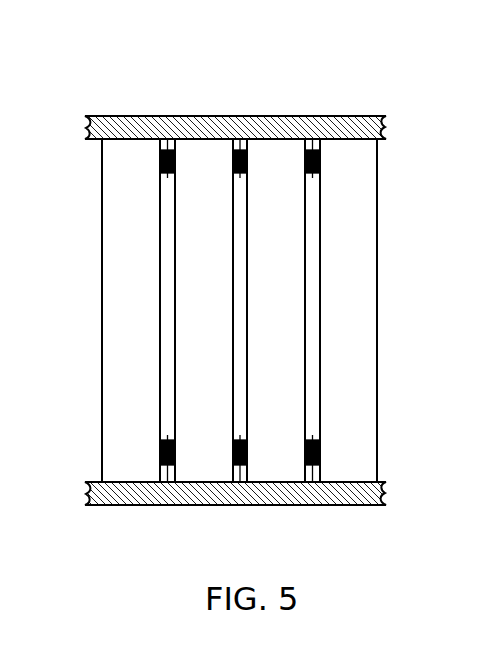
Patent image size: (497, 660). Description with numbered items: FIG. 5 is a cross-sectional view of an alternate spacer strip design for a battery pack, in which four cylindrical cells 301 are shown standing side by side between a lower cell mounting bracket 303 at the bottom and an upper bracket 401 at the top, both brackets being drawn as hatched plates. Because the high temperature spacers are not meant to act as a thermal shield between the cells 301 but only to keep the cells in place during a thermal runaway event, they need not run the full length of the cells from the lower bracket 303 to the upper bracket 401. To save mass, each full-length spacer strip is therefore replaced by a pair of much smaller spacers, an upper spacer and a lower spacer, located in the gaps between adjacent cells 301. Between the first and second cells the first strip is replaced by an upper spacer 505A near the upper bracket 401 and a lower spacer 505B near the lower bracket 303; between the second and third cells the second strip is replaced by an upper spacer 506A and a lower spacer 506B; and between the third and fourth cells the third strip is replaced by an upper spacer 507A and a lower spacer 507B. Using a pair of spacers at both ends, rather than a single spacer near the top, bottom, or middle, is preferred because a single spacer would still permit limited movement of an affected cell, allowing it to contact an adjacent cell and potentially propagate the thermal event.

The cylindrical cells 301 is at (152, 322).
The lower cell mounting bracket 303 is at (123, 497).
The upper bracket 401 is at (123, 122).
The upper spacer 505A is at (165, 146).
The lower spacer 505B is at (165, 472).
The upper spacer 506A is at (238, 146).
The lower spacer 506B is at (238, 472).
The upper spacer 507A is at (311, 146).
The lower spacer 507B is at (311, 472).